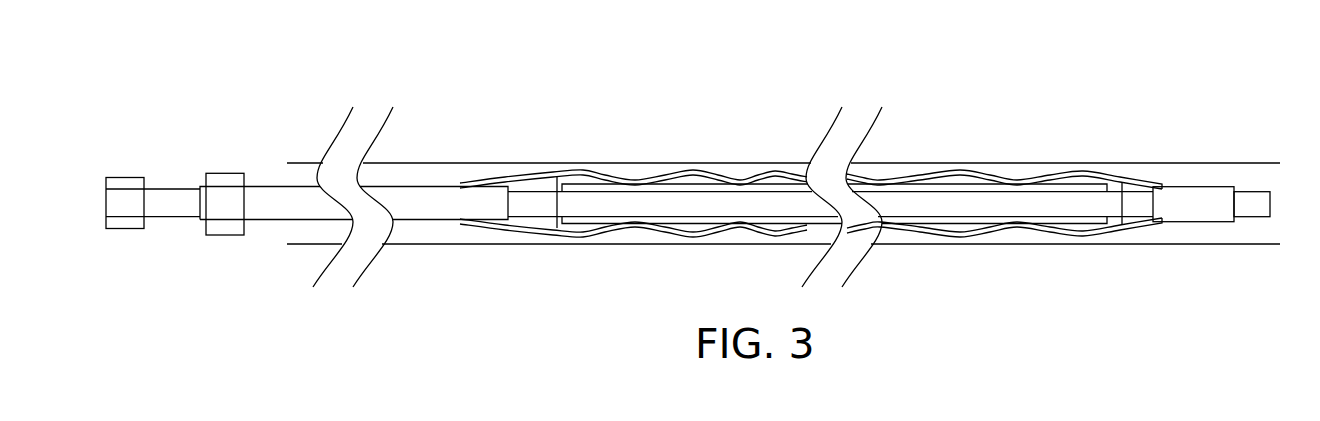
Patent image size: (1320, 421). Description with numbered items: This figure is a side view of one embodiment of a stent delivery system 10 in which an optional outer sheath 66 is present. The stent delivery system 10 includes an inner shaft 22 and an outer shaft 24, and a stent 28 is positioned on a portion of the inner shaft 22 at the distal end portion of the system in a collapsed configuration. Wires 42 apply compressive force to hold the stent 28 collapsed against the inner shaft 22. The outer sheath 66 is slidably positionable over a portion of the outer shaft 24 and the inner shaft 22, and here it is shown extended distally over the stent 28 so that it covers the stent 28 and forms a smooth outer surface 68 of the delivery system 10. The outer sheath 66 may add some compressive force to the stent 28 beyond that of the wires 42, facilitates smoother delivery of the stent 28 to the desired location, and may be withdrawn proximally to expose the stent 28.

The stent delivery system 10 is at (757, 88).
The inner shaft 22 is at (1137, 216).
The outer shaft 24 is at (429, 221).
The stent 28 is at (1093, 183).
The wires 42 is at (598, 173).
The outer sheath 66 is at (938, 163).
The smooth outer surface 68 is at (1028, 245).